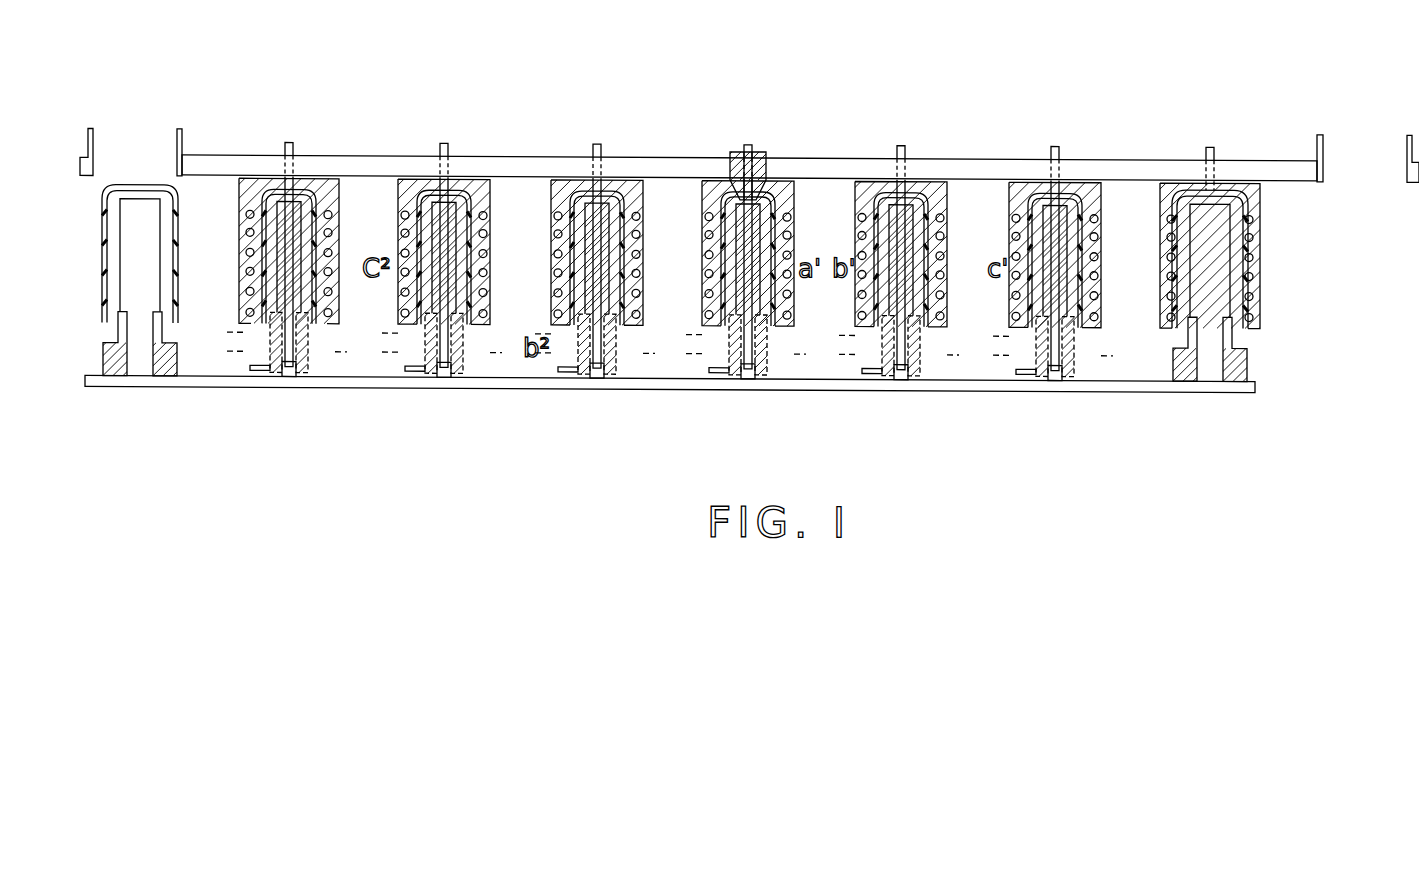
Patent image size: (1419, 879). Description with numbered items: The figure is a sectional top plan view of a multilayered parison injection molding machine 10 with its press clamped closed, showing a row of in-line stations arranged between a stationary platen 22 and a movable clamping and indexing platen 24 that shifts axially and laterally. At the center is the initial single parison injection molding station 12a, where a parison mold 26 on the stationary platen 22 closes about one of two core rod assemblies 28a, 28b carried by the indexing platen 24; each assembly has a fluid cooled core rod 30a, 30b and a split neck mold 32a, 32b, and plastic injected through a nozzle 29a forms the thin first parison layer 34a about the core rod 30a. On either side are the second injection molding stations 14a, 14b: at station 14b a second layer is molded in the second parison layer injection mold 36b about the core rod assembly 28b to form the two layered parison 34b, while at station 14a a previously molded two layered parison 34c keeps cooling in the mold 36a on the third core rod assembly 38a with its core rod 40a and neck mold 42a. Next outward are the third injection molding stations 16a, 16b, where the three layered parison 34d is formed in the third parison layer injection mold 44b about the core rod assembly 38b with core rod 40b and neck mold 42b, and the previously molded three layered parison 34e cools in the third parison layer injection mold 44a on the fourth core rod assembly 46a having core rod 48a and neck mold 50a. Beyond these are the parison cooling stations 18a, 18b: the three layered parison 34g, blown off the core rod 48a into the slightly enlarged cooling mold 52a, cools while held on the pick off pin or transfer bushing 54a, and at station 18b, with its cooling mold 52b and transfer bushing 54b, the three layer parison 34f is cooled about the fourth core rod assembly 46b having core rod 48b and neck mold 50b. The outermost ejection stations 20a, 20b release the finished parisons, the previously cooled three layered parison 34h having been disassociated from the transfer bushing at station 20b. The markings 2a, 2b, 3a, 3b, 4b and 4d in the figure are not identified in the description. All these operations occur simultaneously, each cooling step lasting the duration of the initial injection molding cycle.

The multilayered parison injection molding machine 10 is at (870, 110).
The initial single parison injection molding station 12a is at (768, 149).
The second injection molding station 14a is at (913, 148).
The second injection molding station 14b is at (603, 143).
The third injection molding station 16a is at (1066, 139).
The third injection molding station 16b is at (460, 141).
The parison cooling station 18a is at (1220, 145).
The parison cooling station 18b is at (306, 144).
The ejection station 20a is at (1337, 120).
The ejection station 20b is at (183, 126).
The stationary platen 22 is at (749, 150).
The movable clamping platen 24 is at (1150, 389).
The parison mold 26 is at (788, 214).
The core rod assembly 28a is at (745, 388).
The core rod assembly 28b is at (597, 389).
The nozzle 29a is at (732, 149).
The core rod 30a is at (762, 296).
The core rod 30b is at (640, 290).
The split neck mold 32a is at (780, 345).
The split neck mold 32b is at (636, 333).
The first parison layer 34a is at (780, 255).
The two layered parison 34b is at (633, 256).
The two layered parison 34c is at (936, 254).
The three layered parison 34d is at (478, 256).
The three layered parison 34e is at (1090, 252).
The three layer parison 34f is at (331, 256).
The three layered parison 34g is at (1253, 252).
The three layered parison 34h is at (167, 242).
The second parison layer injection mold 36a is at (943, 213).
The second parison layer injection mold 36b is at (640, 215).
The third core rod assembly 38a is at (905, 387).
The core rod assembly 38b is at (427, 390).
The core rod 40a is at (942, 307).
The core rod 40b is at (484, 290).
The neck mold 42a is at (924, 340).
The neck mold 42b is at (466, 336).
The third parison layer injection mold 44a is at (1098, 211).
The third parison layer injection mold 44b is at (489, 215).
The fourth core rod assembly 46a is at (1052, 386).
The fourth core rod assembly 46b is at (293, 390).
The core rod 48a is at (1070, 296).
The core rod 48b is at (302, 291).
The neck mold 50a is at (1093, 350).
The neck mold 50b is at (332, 366).
The cooling mold 52a is at (1260, 212).
The cooling mold 52b is at (331, 216).
The pick off pin or transfer bushing 54a is at (1232, 386).
The transfer bushing 54b is at (162, 389).
The position reference 2a is at (925, 255).
The position reference 2b is at (453, 283).
The position reference 3a is at (1075, 267).
The position reference 3b is at (373, 328).
The position reference 4b is at (265, 263).
The position reference 4d is at (1235, 268).